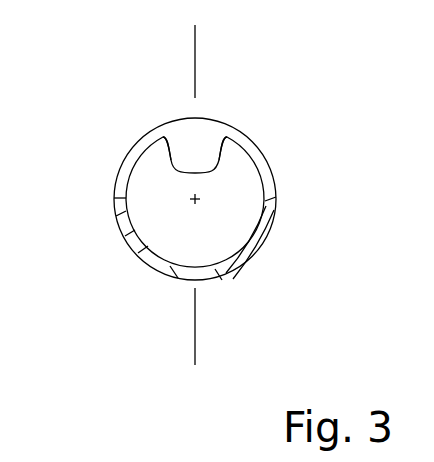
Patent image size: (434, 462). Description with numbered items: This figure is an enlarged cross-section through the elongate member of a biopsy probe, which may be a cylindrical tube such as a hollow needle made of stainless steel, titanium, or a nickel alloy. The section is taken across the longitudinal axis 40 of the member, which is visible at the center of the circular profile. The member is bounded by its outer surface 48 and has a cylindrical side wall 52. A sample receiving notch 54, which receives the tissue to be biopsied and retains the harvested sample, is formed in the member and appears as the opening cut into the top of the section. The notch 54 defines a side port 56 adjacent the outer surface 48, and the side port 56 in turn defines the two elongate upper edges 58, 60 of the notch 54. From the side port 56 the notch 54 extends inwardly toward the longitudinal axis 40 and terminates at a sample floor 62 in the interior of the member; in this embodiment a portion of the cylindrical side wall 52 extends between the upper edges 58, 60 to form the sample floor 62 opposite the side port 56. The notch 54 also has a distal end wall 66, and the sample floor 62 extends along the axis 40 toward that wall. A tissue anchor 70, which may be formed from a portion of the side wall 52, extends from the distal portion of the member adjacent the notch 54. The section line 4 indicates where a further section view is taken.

The section line 4- 4 is at (199, 37).
The longitudinal axis 40 is at (194, 202).
The outer surface 48 is at (137, 257).
The side wall 52 is at (124, 236).
The sample receiving notch 54 is at (239, 188).
The side port 56 is at (122, 164).
The elongate upper edge 58 is at (121, 197).
The elongate upper edge 60 is at (270, 198).
The sample floor 62 is at (206, 268).
The distal end wall 66 is at (228, 215).
The tissue anchor 70 is at (196, 147).